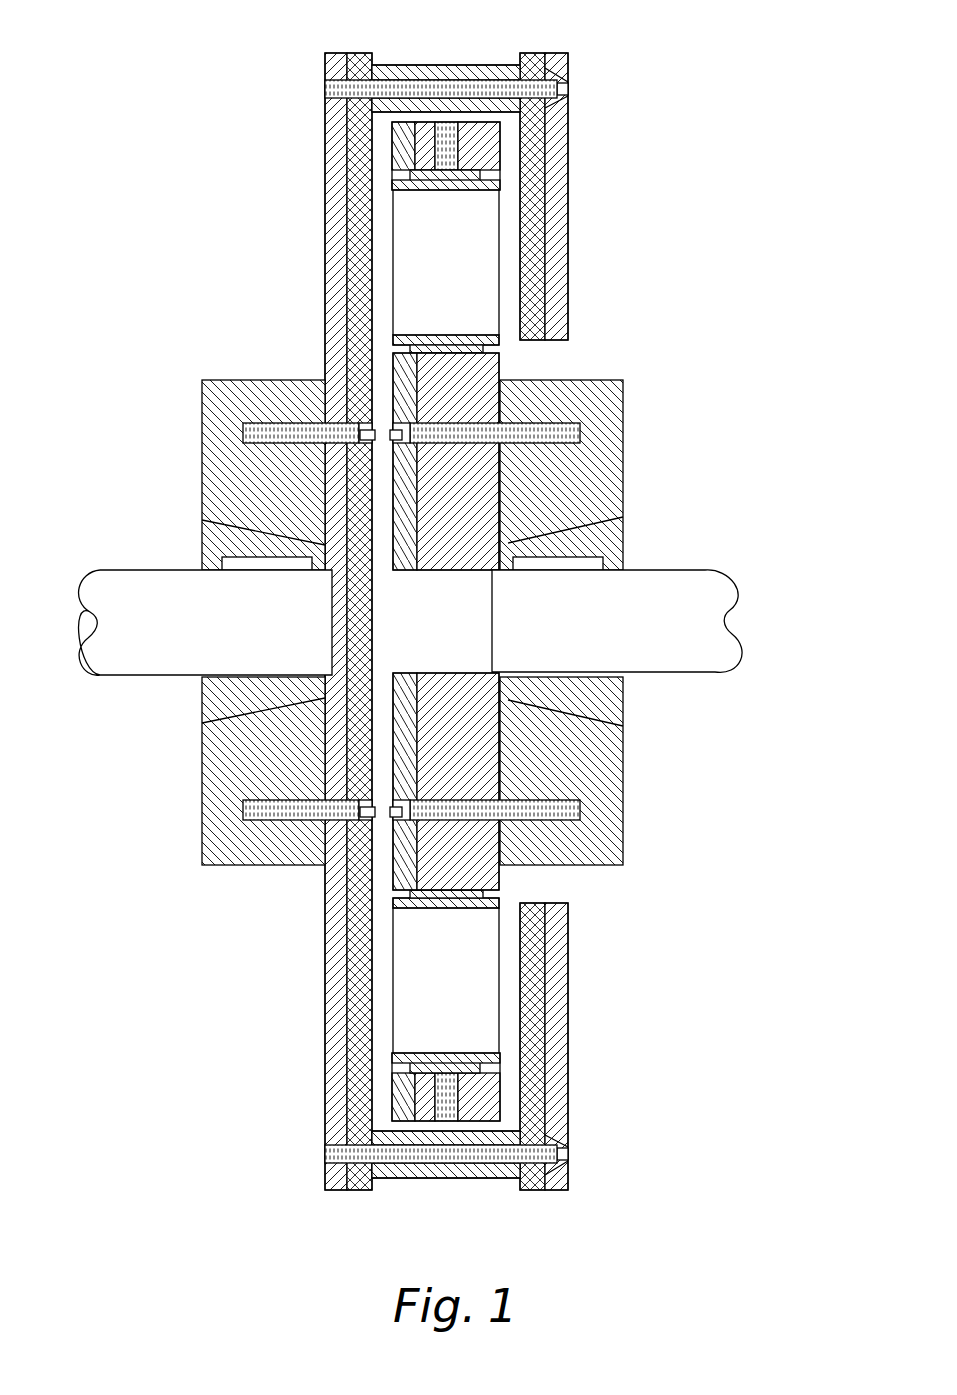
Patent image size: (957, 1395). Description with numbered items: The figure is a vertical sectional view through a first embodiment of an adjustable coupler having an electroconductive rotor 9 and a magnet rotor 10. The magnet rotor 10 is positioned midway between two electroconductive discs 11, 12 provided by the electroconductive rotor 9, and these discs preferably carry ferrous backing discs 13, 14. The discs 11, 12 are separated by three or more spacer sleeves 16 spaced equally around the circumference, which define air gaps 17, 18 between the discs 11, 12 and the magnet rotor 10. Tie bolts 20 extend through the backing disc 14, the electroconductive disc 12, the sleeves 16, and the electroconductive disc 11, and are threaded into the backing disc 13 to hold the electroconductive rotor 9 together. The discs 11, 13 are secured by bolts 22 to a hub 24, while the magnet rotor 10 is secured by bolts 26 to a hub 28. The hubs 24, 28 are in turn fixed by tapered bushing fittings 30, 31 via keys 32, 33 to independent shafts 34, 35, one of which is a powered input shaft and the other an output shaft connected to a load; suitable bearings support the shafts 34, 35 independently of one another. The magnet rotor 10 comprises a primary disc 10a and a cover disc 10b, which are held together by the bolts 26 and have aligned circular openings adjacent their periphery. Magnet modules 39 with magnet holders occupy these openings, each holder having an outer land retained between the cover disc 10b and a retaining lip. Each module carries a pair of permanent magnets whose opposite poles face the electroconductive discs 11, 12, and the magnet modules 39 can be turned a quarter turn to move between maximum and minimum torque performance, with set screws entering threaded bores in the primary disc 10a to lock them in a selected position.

The electroconductive rotor 9 is at (548, 42).
The magnet rotor 10 is at (511, 609).
The primary disc 10a is at (460, 563).
The cover disc 10b is at (403, 563).
The electroconductive disc 11 is at (372, 176).
The electroconductive disc 12 is at (520, 208).
The ferrous backing disc 13 is at (348, 128).
The ferrous backing disc 14 is at (568, 142).
The spacer sleeve 16 is at (447, 65).
The air gap 17 is at (383, 240).
The air gap 18 is at (508, 272).
The tie bolt 20 is at (568, 90).
The bolt 22 is at (272, 430).
The hub 24 is at (234, 604).
The bolt 26 is at (580, 432).
The hub 28 is at (601, 614).
The tapered bushing fitting 30 is at (205, 553).
The tapered bushing fitting 31 is at (625, 543).
The key 32 is at (248, 575).
The key 33 is at (565, 565).
The shaft 34 is at (176, 668).
The shaft 35 is at (686, 663).
The magnet module 39 is at (388, 300).